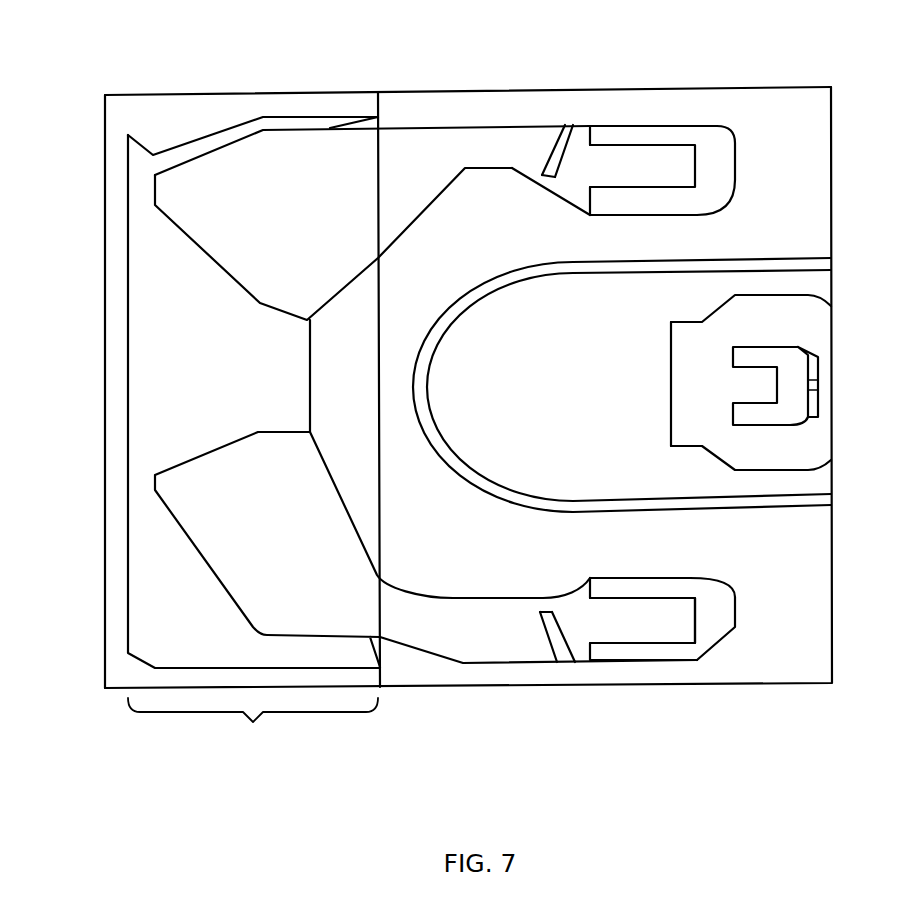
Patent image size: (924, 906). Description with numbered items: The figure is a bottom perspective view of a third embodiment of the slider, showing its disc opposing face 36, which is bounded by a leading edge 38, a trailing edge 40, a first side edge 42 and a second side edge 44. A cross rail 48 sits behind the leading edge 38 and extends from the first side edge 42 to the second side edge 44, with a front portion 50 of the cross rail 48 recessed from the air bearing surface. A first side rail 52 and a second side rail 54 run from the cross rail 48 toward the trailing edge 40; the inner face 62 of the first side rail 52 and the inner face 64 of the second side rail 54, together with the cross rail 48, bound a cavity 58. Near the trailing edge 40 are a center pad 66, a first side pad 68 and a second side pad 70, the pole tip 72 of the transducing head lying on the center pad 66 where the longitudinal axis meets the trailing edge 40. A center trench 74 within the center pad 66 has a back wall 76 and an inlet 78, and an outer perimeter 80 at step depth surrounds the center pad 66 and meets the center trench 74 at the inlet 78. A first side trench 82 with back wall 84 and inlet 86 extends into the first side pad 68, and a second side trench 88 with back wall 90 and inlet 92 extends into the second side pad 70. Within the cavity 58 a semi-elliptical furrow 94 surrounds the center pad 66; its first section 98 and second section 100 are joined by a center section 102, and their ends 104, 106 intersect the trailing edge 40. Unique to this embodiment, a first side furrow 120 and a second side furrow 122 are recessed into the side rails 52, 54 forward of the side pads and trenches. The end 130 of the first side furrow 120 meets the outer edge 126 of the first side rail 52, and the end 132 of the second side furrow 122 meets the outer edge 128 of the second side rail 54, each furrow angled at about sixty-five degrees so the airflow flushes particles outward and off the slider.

The disc opposing face 36 is at (243, 207).
The leading edge 38 is at (112, 527).
The trailing edge 40 is at (832, 604).
The first side edge 42 is at (468, 92).
The second side edge 44 is at (418, 690).
The cross rail 48 is at (253, 730).
The front portion 50 is at (170, 388).
The first side rail 52 is at (442, 150).
The second side rail 54 is at (502, 650).
The cavity 58 is at (458, 558).
The inner face 62 is at (552, 188).
The inner face 64 is at (505, 598).
The center pad 66 is at (783, 400).
The first side pad 68 is at (712, 165).
The second side pad 70 is at (707, 608).
The pole tip 72 is at (818, 384).
The center trench 74 is at (755, 385).
The back wall 76 is at (778, 382).
The inlet 78 is at (717, 377).
The outer perimeter 80 is at (767, 442).
The first side trench 82 is at (662, 173).
The back wall 84 is at (697, 158).
The inlet 86 is at (597, 168).
The second side trench 88 is at (655, 620).
The back wall 90 is at (697, 630).
The inlet 92 is at (590, 612).
The furrow 94 is at (465, 318).
The first section 98 is at (652, 273).
The second section 100 is at (650, 504).
The center section 102 is at (423, 417).
The end 104 is at (831, 265).
The end 106 is at (831, 498).
The first side furrow 120 is at (553, 155).
The second side furrow 122 is at (545, 648).
The outer edge 126 is at (583, 125).
The outer edge 128 is at (537, 665).
The end 130 is at (574, 122).
The end 132 is at (575, 662).